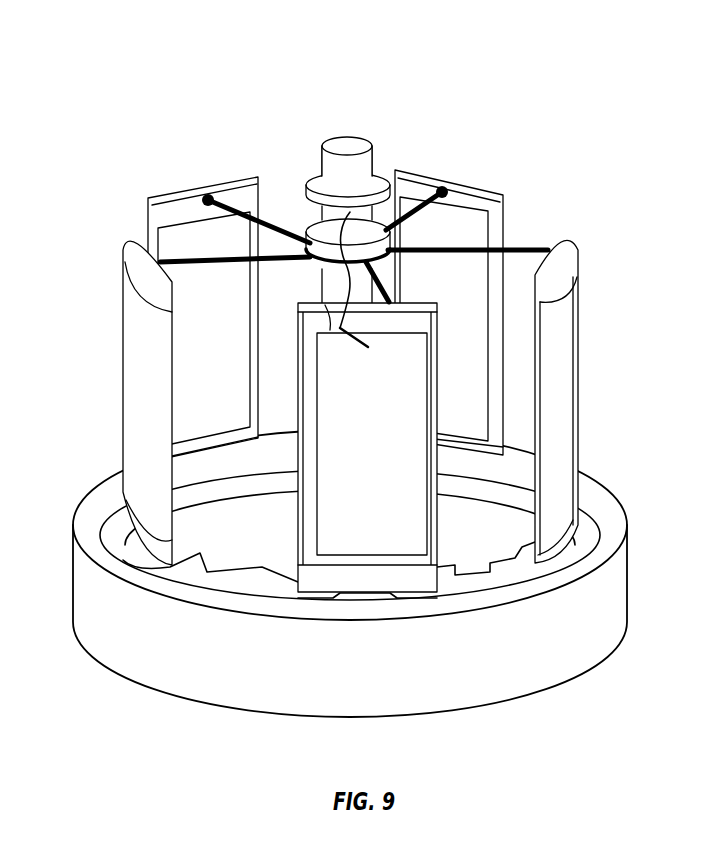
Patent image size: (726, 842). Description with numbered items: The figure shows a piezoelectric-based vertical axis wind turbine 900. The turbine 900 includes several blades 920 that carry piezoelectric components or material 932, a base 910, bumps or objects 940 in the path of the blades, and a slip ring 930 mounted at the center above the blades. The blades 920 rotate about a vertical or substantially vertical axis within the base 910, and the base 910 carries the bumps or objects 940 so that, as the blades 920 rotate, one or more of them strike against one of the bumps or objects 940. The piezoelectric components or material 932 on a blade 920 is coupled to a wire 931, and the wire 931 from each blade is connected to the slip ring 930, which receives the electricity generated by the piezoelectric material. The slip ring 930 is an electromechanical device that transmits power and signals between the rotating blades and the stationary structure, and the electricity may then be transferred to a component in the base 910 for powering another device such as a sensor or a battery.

The piezoelectric-based VAWT 900 is at (150, 40).
The base 910 is at (628, 585).
The blades 920 is at (563, 240).
The slip ring 930 is at (318, 178).
The wire 931 is at (368, 347).
The piezoelectric components or material 932 is at (330, 330).
The bumps or objects 940 is at (118, 543).